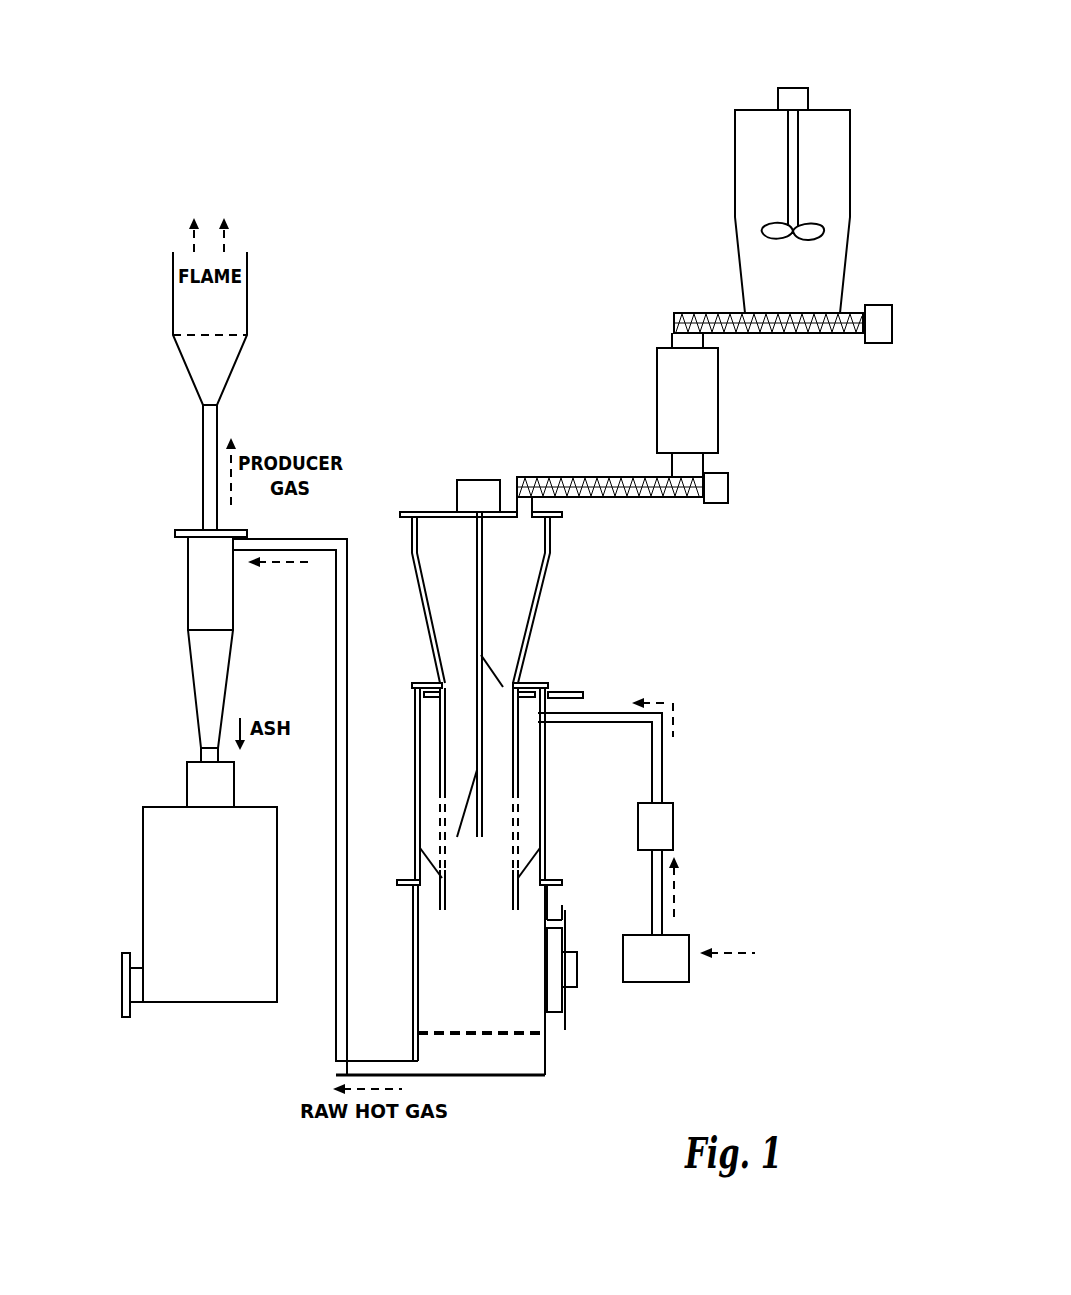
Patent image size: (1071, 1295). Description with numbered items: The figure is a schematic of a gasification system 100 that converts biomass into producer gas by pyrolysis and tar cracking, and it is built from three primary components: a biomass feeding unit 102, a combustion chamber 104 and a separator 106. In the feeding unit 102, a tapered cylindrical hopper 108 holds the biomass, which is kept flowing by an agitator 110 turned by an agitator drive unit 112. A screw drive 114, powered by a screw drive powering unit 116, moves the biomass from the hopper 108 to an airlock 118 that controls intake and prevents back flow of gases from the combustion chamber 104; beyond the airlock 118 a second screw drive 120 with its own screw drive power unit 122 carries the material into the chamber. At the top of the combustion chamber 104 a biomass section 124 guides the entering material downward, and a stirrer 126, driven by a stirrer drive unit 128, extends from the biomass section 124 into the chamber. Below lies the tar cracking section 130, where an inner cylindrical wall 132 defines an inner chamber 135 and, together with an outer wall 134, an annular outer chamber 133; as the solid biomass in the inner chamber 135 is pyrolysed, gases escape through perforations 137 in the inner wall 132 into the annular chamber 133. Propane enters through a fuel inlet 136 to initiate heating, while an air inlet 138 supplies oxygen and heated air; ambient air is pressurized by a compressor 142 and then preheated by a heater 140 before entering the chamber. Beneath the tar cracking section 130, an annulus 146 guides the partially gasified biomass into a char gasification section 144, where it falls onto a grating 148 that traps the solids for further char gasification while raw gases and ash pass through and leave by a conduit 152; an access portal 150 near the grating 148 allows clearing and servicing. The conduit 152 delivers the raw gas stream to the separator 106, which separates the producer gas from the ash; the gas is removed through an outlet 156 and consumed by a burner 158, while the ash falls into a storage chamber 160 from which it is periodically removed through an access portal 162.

The gasification system 100 is at (576, 142).
The biomass feeding unit 102 is at (862, 95).
The combustion chamber 104 is at (560, 597).
The separator 106 is at (188, 1020).
The hopper 108 is at (760, 200).
The agitator 110 is at (793, 165).
The agitator drive unit 112 is at (795, 94).
The screw drive 114 is at (730, 315).
The screw drive powering unit 116 is at (890, 344).
The airlock 118 is at (715, 402).
The screw drive 120 is at (617, 477).
The screw drive power unit 122 is at (720, 497).
The biomass section 124 is at (513, 543).
The stirrer 126 is at (475, 596).
The stirrer drive unit 128 is at (477, 480).
The tar cracking section 130 is at (560, 801).
The inner cylindrical wall 132 is at (518, 737).
The annular outer chamber 133 is at (530, 808).
The outer wall 134 is at (418, 772).
The inner chamber 135 is at (493, 757).
The fuel inlet 136 is at (568, 690).
The perforations 137 is at (517, 830).
The air inlet 138 is at (606, 715).
The heater 140 is at (669, 822).
The compressor 142 is at (683, 970).
The char gasification section 144 is at (548, 1017).
The annulus 146 is at (518, 898).
The grating 148 is at (484, 1037).
The access portal 150 is at (566, 998).
The conduit 152 is at (297, 540).
The outlet 156 is at (203, 468).
The burner 158 is at (173, 278).
The storage chamber 160 is at (153, 812).
The access portal 162 is at (125, 1012).